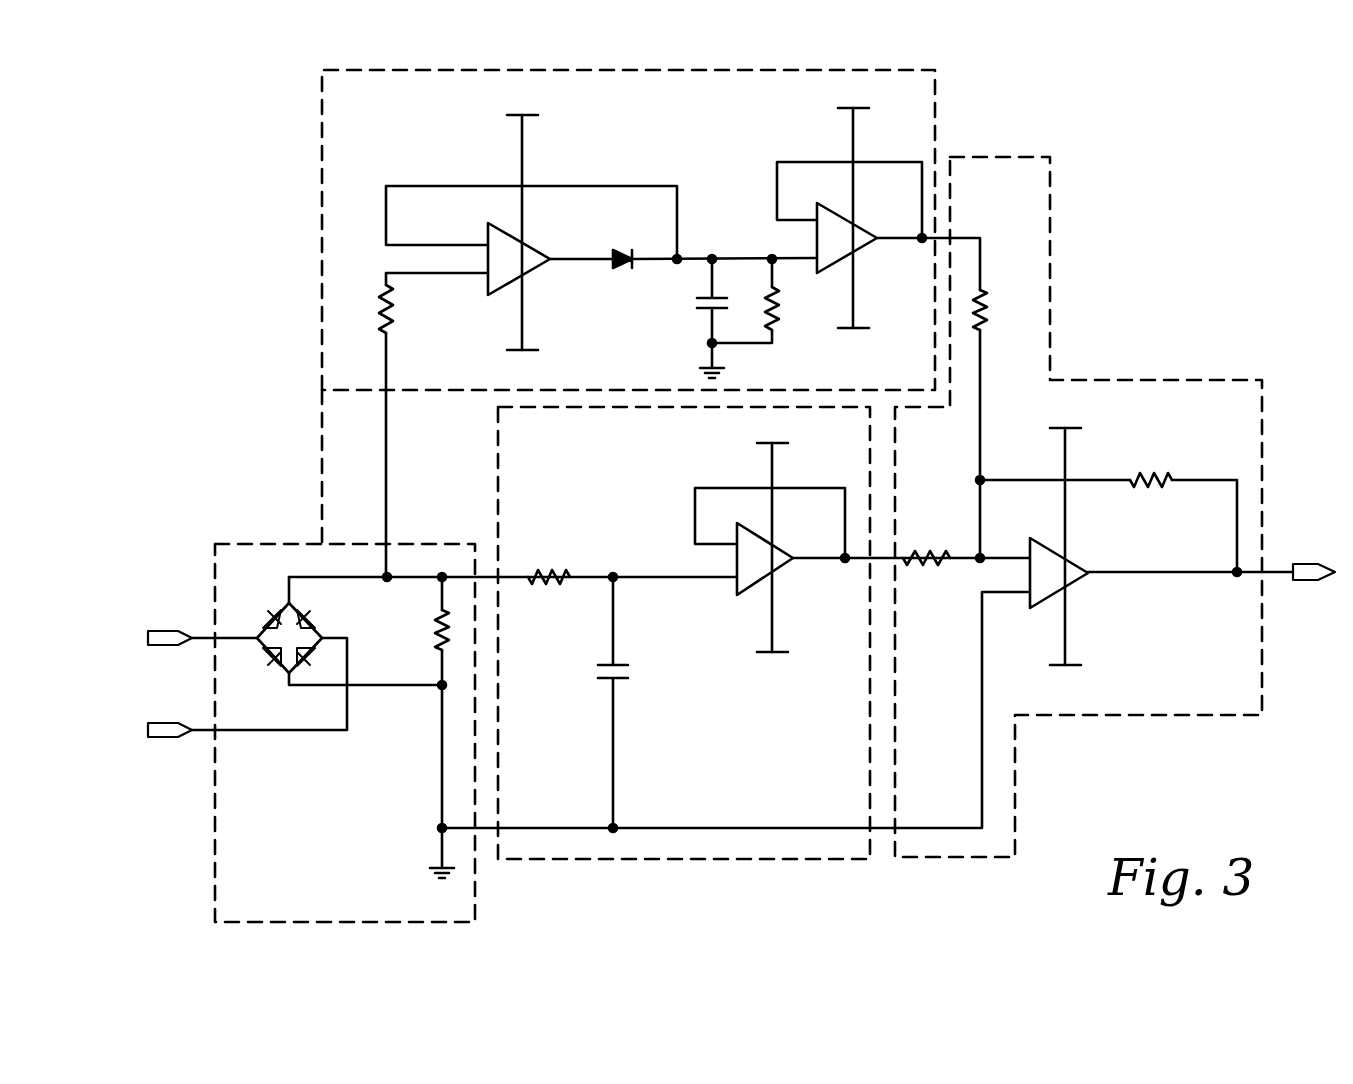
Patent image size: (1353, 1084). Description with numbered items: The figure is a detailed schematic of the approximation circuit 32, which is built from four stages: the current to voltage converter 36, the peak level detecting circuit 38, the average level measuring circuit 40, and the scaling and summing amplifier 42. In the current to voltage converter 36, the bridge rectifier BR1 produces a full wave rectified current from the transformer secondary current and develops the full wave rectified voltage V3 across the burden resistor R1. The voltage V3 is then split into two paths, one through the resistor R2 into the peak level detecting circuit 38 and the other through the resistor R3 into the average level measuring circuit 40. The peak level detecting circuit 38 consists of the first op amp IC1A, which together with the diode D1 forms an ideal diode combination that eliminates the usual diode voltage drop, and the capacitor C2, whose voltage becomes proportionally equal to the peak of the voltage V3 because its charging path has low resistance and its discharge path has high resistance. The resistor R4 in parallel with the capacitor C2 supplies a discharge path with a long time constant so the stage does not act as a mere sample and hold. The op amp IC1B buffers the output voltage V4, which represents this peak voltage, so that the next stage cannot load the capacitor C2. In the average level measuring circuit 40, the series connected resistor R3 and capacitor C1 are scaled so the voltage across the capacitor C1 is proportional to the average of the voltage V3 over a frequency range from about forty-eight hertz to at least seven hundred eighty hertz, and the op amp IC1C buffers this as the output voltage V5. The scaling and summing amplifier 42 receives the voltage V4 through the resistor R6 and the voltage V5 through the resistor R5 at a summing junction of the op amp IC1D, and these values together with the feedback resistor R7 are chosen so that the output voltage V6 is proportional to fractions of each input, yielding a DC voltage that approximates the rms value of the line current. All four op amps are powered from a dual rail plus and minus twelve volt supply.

The approximation circuit 32 is at (291, 438).
The current to voltage converter 36 is at (252, 778).
The peak level detecting circuit 38 is at (340, 250).
The average level measuring circuit 40 is at (730, 798).
The scaling and summing amplifier 42 is at (1024, 266).
The bridge rectifier BR1 is at (278, 611).
The burden resistor R1 is at (424, 727).
The resistor R2 is at (368, 309).
The resistor R3 is at (549, 564).
The resistor R4 is at (761, 301).
The resistor R5 is at (926, 544).
The resistor R6 is at (997, 310).
The feedback resistor R7 is at (1151, 469).
The capacitor C1 is at (596, 702).
The capacitor C2 is at (695, 318).
The diode D1 is at (623, 244).
The first op amp IC1A is at (514, 236).
The op amp IC1B is at (845, 219).
The op amp IC1C is at (762, 548).
The op amp IC1D is at (1057, 548).
The full wave rectified voltage V3 is at (387, 577).
The output voltage V4 is at (982, 242).
The output voltage V5 is at (880, 563).
The output voltage V6 is at (1270, 570).